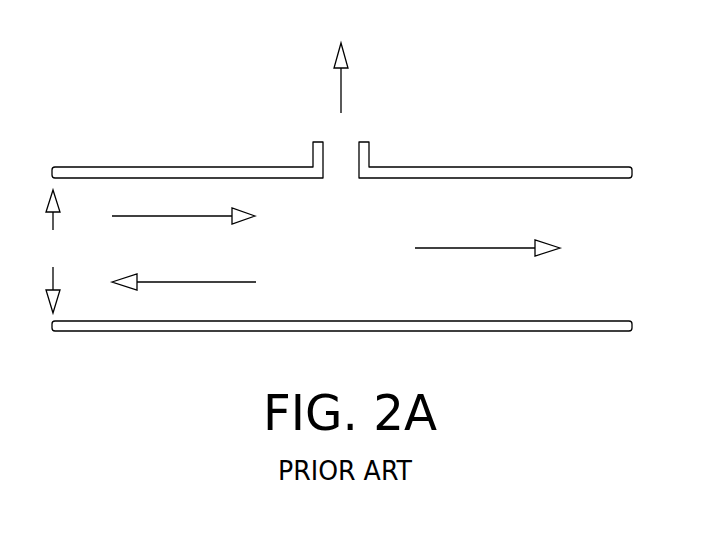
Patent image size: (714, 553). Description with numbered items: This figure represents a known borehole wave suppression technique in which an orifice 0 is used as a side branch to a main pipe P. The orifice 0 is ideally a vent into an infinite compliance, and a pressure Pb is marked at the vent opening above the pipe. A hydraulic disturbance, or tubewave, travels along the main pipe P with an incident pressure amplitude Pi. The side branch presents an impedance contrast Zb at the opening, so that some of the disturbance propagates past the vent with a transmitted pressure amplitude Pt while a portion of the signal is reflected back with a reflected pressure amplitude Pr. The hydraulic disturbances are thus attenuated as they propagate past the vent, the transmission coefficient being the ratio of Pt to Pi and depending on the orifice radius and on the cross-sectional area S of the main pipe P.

The main pipe P is at (603, 313).
The orifice 0 is at (378, 127).
The impedance contrast Zb is at (343, 196).
The back pressure Pb is at (347, 57).
The cross-sectional area of the main pipe S is at (52, 251).
The incident pressure amplitude Pi is at (202, 219).
The reflected pressure amplitude Pr is at (203, 284).
The transmitted pressure amplitude Pt is at (506, 253).